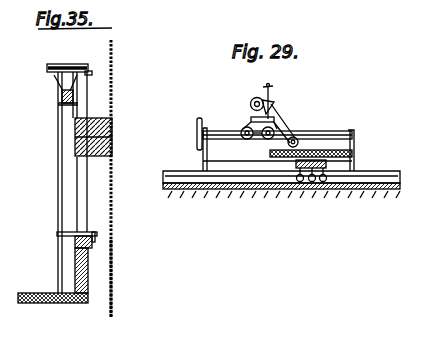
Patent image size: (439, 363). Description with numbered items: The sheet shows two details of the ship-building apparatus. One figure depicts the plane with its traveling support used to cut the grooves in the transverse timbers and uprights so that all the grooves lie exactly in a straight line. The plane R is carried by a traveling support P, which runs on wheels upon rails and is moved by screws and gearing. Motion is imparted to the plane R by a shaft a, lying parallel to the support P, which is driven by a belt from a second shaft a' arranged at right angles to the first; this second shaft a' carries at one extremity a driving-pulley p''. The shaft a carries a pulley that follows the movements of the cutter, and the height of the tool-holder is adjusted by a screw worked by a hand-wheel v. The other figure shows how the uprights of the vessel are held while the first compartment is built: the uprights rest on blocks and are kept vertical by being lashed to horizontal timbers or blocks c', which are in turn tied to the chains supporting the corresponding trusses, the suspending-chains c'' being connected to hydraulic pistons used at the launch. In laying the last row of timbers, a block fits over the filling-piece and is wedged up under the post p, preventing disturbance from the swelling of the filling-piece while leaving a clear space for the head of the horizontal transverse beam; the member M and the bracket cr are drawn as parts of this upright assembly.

In FIG. 35, the mast column M is at (62, 182).
In FIG. 35, the post p is at (91, 152).
In FIG. 35, the horizontal timbers or blocks c' is at (99, 178).
In FIG. 35, the suspending-chains c'' is at (121, 278).
In FIG. 35, the bracket cr is at (76, 235).
In FIG. 29, the driving-pulley p'' is at (194, 128).
In FIG. 29, the second shaft a' is at (311, 134).
In FIG. 29, the shaft a is at (255, 98).
In FIG. 29, the hand-wheel v is at (275, 99).
In FIG. 29, the traveling support P is at (255, 119).
In FIG. 29, the plane R is at (289, 125).